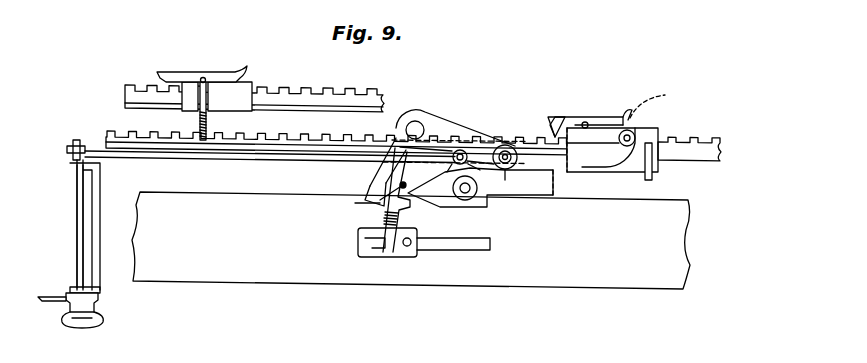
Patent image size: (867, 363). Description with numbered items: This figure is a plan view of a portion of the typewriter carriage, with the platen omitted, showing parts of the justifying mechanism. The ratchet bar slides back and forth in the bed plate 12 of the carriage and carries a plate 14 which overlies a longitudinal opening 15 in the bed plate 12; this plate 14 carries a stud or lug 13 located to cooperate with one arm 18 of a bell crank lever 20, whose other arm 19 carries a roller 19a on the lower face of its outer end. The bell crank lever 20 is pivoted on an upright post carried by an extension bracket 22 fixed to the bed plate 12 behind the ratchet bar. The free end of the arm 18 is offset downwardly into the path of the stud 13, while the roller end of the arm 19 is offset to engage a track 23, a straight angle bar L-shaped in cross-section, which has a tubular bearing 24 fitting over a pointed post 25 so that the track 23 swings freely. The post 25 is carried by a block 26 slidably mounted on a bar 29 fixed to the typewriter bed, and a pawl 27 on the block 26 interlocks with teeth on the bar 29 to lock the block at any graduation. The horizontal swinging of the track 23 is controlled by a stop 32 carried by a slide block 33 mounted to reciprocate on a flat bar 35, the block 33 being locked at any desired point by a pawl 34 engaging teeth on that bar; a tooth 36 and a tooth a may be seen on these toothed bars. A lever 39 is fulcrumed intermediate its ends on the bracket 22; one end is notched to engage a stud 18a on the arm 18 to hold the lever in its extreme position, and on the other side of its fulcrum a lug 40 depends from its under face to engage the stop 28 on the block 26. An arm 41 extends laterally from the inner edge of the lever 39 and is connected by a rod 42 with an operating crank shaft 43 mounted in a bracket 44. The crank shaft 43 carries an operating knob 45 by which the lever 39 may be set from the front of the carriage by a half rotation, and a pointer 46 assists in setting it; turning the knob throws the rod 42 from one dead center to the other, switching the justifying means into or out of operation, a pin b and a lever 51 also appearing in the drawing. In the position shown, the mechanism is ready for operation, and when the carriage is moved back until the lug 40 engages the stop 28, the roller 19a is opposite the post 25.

The bed plate 12 is at (578, 270).
The stud or lug 13 is at (392, 254).
The plate 14 is at (400, 258).
The longitudinal opening 15 is at (462, 250).
The arm 18 is at (395, 142).
The stud 18a is at (372, 242).
The arm 19 is at (468, 135).
The roller 19a is at (519, 136).
The bell crank lever 20 is at (455, 125).
The extension bracket 22 is at (366, 203).
The track 23 is at (584, 150).
The tubular bearing 24 is at (628, 130).
The post 25 is at (667, 138).
The block 26 is at (574, 133).
The pawl 27 is at (562, 115).
The stop 28 is at (655, 175).
The bar 29 is at (702, 141).
The stop 32 is at (199, 122).
The block 33 is at (237, 89).
The pawl 34 is at (184, 73).
The flat bar 35 is at (338, 100).
The rack tooth 36 is at (287, 88).
The tooth a is at (356, 86).
The lever 39 is at (497, 197).
The lug 40 is at (515, 179).
The arm 41 is at (437, 198).
The rod 42 is at (270, 151).
The crank shaft 43 is at (80, 248).
The bracket 44 is at (120, 222).
The operating knob 45 is at (93, 330).
The pointer 46 is at (50, 303).
The lever 51 is at (668, 140).
The pin b is at (400, 185).